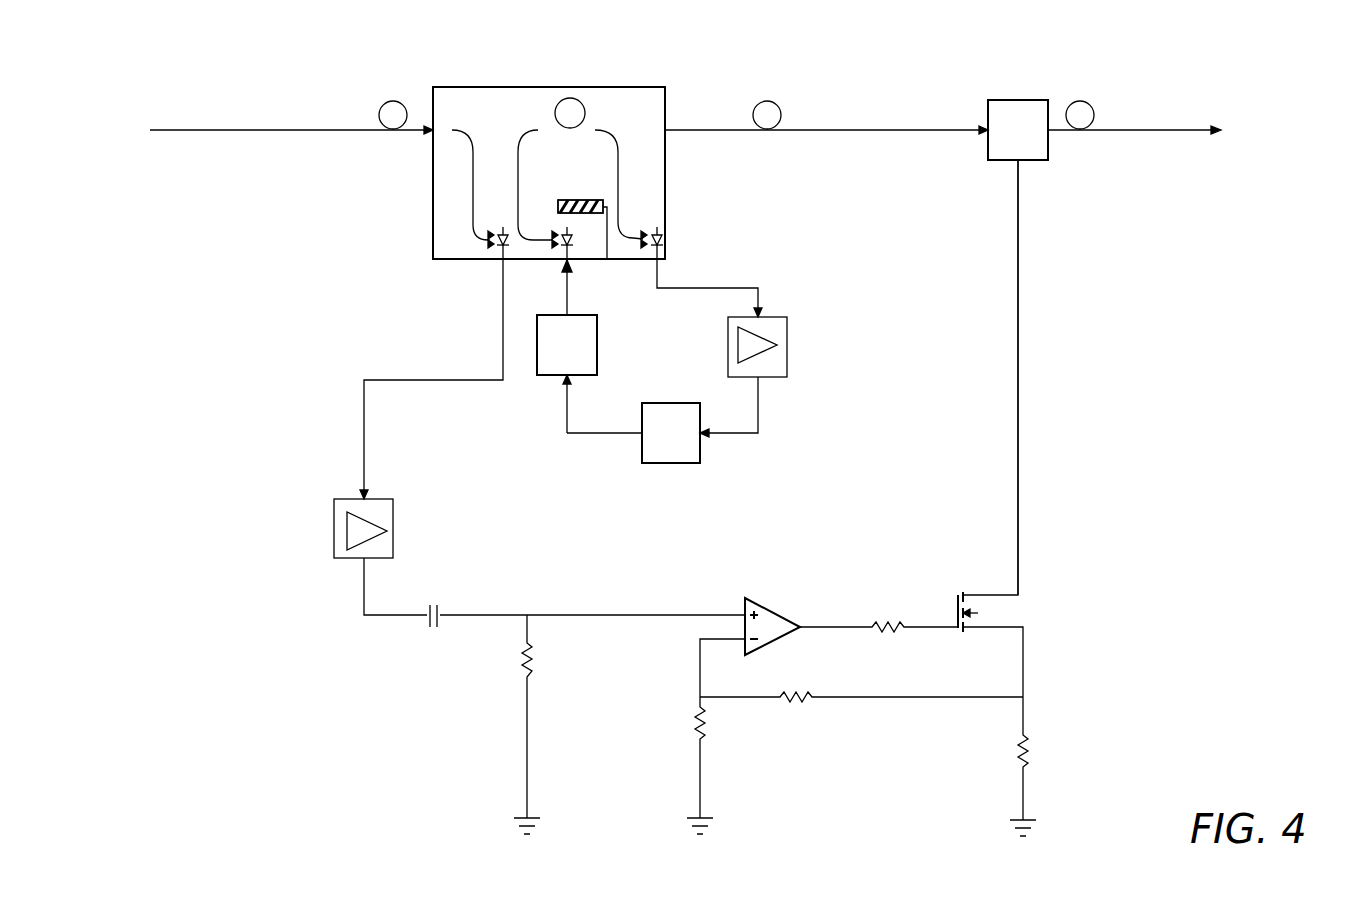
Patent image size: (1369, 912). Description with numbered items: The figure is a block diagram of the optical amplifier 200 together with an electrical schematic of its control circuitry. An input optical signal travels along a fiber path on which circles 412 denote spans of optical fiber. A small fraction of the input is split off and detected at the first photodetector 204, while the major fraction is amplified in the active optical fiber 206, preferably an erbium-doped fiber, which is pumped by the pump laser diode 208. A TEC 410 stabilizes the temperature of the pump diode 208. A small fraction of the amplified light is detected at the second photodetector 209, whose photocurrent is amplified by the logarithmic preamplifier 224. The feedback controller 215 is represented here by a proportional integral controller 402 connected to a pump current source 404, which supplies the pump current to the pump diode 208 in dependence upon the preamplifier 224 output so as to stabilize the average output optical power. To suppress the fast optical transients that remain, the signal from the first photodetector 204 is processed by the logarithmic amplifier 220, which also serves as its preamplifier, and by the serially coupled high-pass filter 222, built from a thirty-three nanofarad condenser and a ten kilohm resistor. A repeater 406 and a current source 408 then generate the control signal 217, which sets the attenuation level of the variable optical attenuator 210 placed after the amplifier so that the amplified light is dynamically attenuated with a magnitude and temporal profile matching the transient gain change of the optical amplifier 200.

The optical amplifier 200 is at (650, 82).
The first photodetector 204 is at (501, 249).
The active optical fiber 206 is at (568, 98).
The pump laser diode 208 is at (560, 250).
The second photodetector 209 is at (665, 240).
The variable optical attenuator 210 is at (1008, 100).
The feedback controller 215 is at (710, 470).
The control signal 217 is at (1018, 320).
The logarithmic amplifier 220 is at (334, 530).
The high-pass filter 222 is at (555, 835).
The logarithmic preamplifier 224 is at (790, 345).
The proportional integral (PI) controller 402 is at (664, 403).
The pump current source 404 is at (567, 374).
The repeater 406 is at (830, 833).
The current source 408 is at (1040, 840).
The TEC 410 is at (590, 200).
The circles denoting spans of optical fiber 412 is at (393, 101).